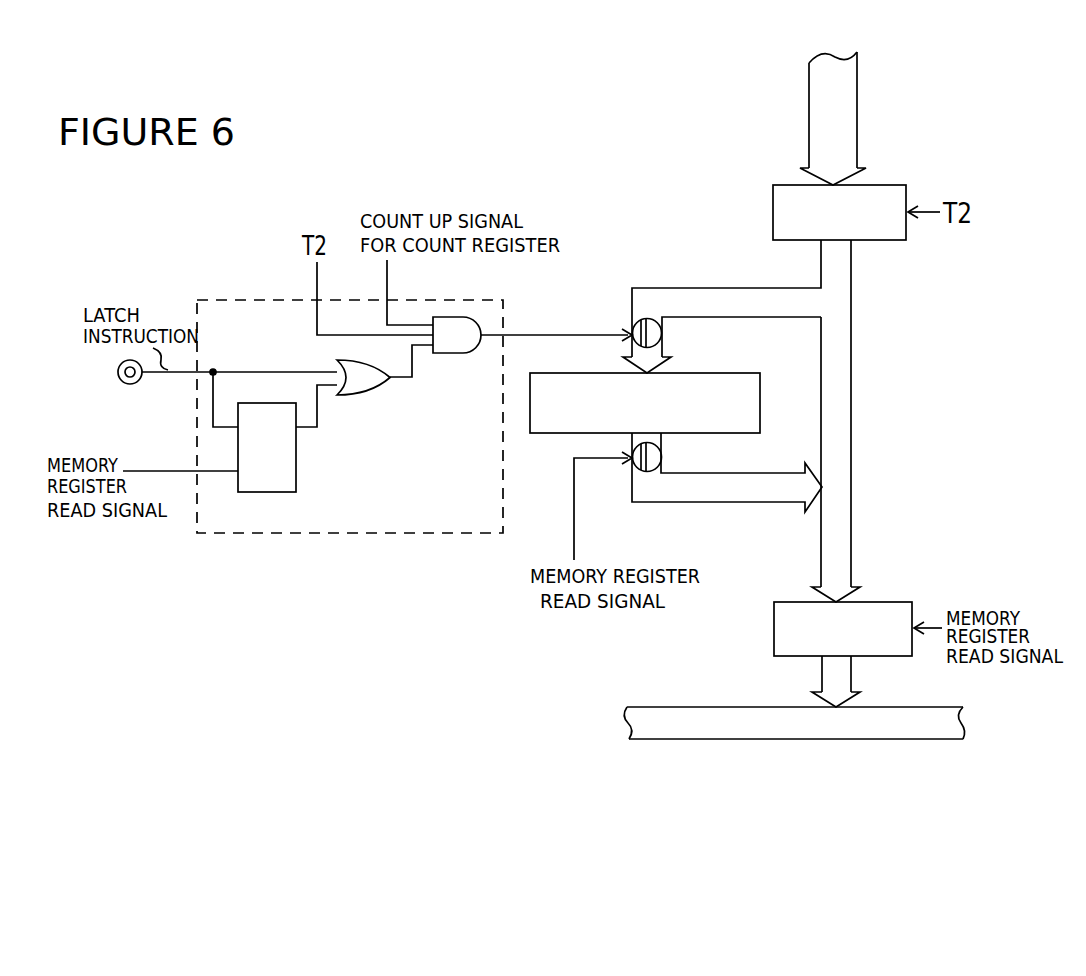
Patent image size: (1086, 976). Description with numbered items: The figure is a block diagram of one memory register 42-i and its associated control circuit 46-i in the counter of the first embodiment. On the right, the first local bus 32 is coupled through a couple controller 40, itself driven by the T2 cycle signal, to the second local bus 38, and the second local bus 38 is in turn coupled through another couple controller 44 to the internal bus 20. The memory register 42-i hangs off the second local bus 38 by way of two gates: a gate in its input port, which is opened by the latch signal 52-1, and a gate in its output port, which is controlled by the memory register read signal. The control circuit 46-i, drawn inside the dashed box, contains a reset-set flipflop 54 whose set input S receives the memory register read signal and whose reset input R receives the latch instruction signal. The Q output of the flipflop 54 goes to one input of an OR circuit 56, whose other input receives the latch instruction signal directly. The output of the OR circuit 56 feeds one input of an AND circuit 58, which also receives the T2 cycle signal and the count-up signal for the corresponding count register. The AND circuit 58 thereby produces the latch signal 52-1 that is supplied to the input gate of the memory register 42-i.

The internal bus 20 is at (897, 707).
The first local bus 32 is at (857, 128).
The second local bus 38 is at (852, 470).
The couple controller 40 is at (866, 243).
The memory register 42-i is at (709, 373).
The couple controller 44 is at (880, 600).
The control circuit 46-i is at (324, 535).
The latch signal 52-1 is at (550, 333).
The reset-set flipflop 54 is at (297, 466).
The OR circuit 56 is at (380, 393).
The AND circuit 58 is at (462, 355).